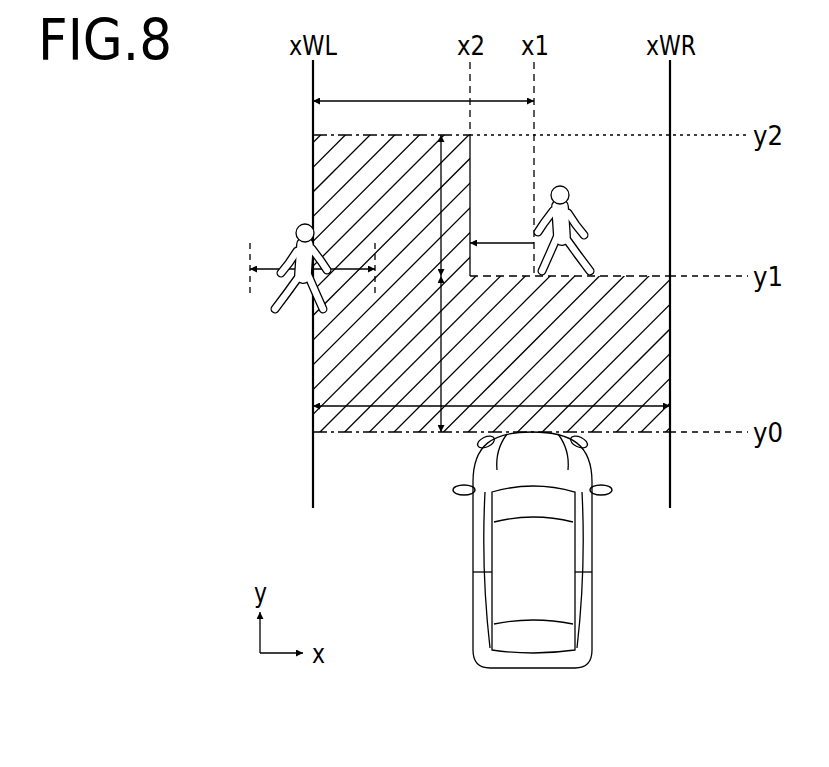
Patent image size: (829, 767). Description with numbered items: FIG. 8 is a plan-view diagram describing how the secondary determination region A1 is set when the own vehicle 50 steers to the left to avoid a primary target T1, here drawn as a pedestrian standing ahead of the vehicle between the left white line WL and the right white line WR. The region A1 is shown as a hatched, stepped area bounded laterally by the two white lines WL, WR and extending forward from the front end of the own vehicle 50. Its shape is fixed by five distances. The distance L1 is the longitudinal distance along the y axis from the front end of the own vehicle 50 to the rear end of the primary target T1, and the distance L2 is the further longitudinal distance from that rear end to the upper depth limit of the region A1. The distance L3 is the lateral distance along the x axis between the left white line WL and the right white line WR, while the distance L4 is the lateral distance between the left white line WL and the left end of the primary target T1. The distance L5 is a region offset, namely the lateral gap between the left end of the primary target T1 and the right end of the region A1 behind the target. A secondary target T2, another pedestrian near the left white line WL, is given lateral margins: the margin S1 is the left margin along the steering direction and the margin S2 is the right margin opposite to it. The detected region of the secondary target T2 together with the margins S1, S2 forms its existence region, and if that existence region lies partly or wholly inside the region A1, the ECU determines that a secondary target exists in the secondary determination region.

The own vehicle 50 is at (590, 632).
The primary target T1 is at (583, 208).
The secondary target T2 is at (300, 227).
The secondary determination region A1 is at (670, 346).
The left white line WL is at (313, 472).
The right white line WR is at (672, 472).
The distance L1 is at (421, 354).
The distance L2 is at (420, 205).
The distance L3 is at (491, 388).
The distance L4 is at (423, 84).
The distance L5 is at (502, 227).
The margin S1 is at (344, 264).
The margin S2 is at (281, 264).